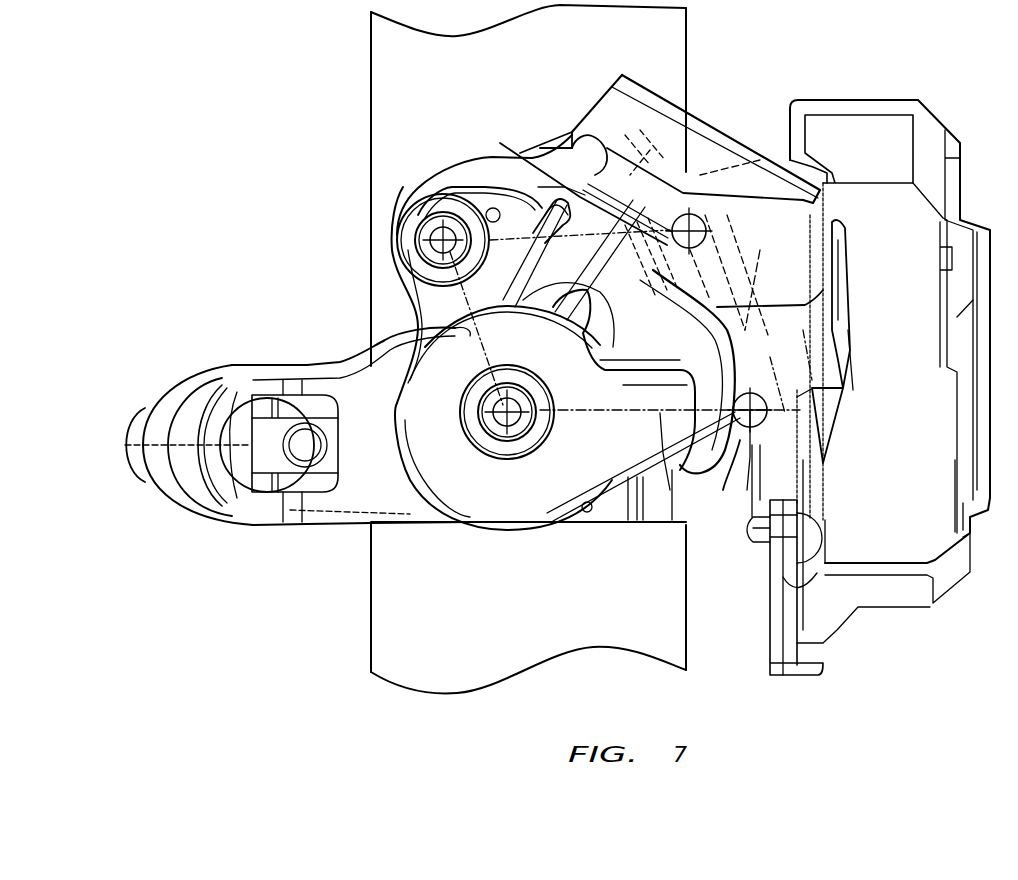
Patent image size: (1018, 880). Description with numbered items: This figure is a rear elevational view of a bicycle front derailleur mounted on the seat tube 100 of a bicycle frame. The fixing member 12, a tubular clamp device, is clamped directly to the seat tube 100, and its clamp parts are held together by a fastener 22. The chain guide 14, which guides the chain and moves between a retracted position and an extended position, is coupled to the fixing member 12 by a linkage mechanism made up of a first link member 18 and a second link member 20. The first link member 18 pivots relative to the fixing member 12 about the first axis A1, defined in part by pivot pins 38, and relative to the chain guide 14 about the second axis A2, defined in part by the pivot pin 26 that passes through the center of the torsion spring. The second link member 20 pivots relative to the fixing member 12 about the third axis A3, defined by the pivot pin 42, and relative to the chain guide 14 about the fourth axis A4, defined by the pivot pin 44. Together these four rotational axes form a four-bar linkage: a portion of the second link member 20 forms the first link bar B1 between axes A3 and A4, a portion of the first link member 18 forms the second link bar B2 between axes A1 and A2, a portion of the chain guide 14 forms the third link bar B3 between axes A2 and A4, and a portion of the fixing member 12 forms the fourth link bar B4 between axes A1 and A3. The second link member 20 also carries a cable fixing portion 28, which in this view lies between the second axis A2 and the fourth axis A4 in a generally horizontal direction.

The seat tube 100 is at (371, 53).
The chain guide 14 is at (927, 147).
The fixing member 12 is at (200, 495).
The fastener 22 is at (272, 422).
The cable fixing portion 28 is at (500, 143).
The second link member 20 is at (622, 444).
The pivot pin 44 is at (395, 258).
The pivot pin 42 is at (495, 400).
The pivot pin 26 is at (700, 240).
The first link member 18 is at (717, 275).
The pivot pins 38 is at (742, 422).
The first axis A1 is at (760, 413).
The second axis A2 is at (690, 213).
The third axis A3 is at (503, 427).
The fourth axis A4 is at (425, 243).
The first link bar B1 is at (505, 330).
The second link bar B2 is at (737, 373).
The third link bar B3 is at (617, 217).
The fourth link bar B4 is at (665, 440).